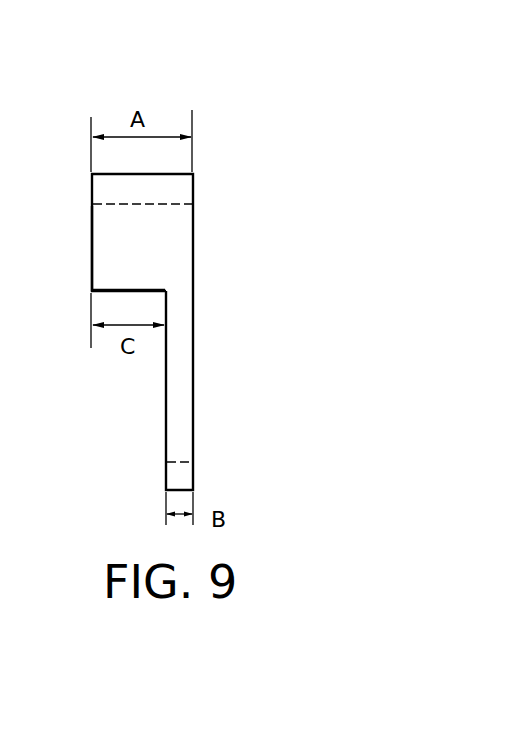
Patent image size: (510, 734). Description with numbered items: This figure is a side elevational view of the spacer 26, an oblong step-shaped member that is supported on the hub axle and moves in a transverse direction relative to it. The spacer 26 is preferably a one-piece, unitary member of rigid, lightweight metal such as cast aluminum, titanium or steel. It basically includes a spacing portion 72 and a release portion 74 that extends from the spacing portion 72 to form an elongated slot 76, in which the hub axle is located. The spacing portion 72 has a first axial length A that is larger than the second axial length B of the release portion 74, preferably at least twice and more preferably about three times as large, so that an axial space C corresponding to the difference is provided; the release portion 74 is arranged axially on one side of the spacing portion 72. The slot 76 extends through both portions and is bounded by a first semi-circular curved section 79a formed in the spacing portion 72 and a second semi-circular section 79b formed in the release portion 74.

The spacer 26 is at (287, 106).
The spacing portion 72 is at (196, 173).
The release portion 74 is at (200, 490).
The elongated slot 76 is at (116, 223).
The first semi-circular curved section 79a is at (157, 205).
The second semi-circular section 79b is at (179, 461).